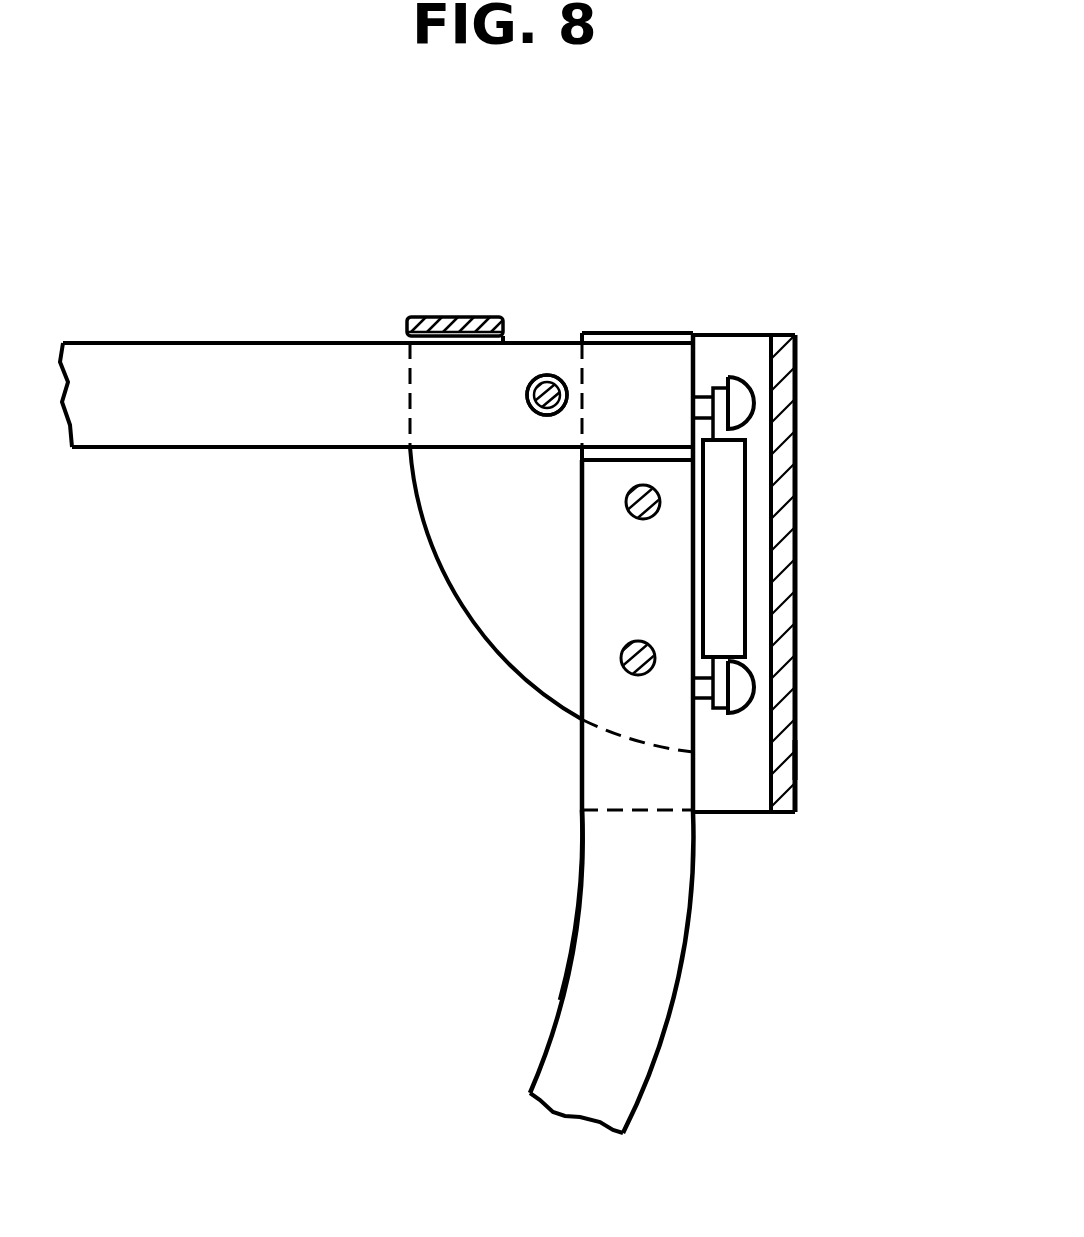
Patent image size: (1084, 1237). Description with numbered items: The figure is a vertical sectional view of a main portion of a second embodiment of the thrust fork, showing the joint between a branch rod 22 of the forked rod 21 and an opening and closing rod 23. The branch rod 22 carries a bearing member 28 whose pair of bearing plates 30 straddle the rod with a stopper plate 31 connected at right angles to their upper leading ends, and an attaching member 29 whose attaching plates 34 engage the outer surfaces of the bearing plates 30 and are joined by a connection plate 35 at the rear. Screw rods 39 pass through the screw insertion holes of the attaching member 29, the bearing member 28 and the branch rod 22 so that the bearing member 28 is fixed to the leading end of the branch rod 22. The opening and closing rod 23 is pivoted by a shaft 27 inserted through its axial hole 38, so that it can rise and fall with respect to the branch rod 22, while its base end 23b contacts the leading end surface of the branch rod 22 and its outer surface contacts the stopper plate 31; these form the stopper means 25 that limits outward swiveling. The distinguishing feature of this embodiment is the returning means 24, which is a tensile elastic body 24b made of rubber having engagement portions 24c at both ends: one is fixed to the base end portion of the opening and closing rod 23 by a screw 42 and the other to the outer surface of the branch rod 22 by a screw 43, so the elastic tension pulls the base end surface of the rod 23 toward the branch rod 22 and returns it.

The forked rod 21 is at (608, 910).
The branch rod 22 is at (583, 998).
The opening and closing rod 23 is at (120, 450).
The base end 23b is at (633, 372).
The returning means 24 is at (758, 503).
The tensile elastic body 24b is at (738, 553).
The engagement portion 24c is at (717, 383).
The stopper means 25 is at (507, 302).
The shaft 27 is at (527, 393).
The bearing member 28 is at (490, 600).
The attaching member 29 is at (806, 341).
The bearing plate 30 is at (517, 638).
The stopper plate 31 is at (437, 318).
The attaching plate 34 is at (728, 787).
The connection plate 35 is at (798, 757).
The axial hole 38 is at (535, 412).
The screw rod 39 is at (630, 510).
The screw 42 is at (745, 405).
The screw 43 is at (745, 690).